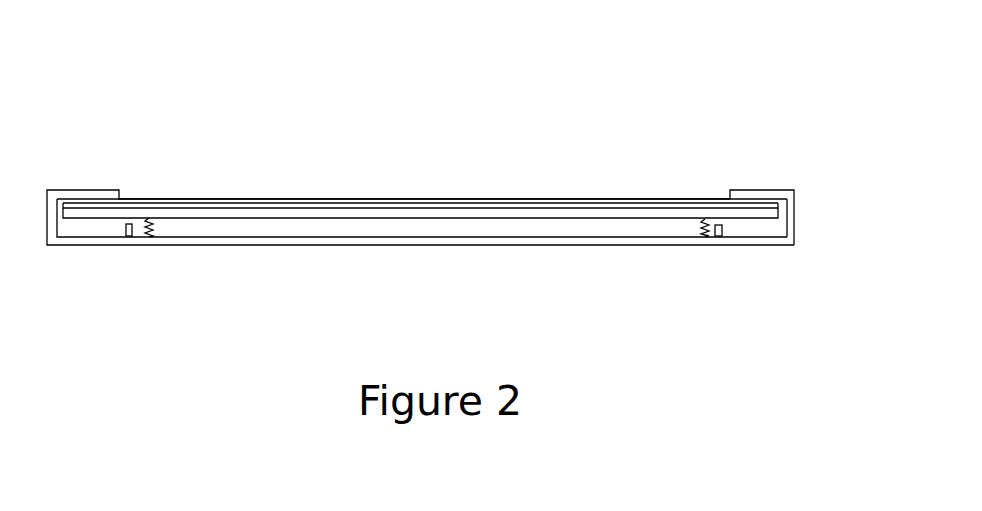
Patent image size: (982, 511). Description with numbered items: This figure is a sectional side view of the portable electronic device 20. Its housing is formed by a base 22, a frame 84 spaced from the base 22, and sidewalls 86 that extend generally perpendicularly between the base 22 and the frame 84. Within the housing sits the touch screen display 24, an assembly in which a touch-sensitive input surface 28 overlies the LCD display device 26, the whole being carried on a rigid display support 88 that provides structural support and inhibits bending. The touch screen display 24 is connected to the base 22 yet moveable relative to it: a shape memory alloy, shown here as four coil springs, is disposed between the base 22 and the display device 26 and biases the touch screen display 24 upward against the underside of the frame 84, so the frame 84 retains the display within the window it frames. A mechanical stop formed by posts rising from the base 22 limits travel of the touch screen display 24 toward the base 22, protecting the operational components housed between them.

The portable electronic device 20 is at (678, 112).
The base 22 is at (655, 241).
The touch screen display 24 is at (178, 194).
The display device 26 is at (408, 203).
The touch-sensitive input surface 28 is at (505, 199).
The frame 84 is at (757, 193).
The sidewalls 86 is at (790, 222).
The display support 88 is at (258, 215).